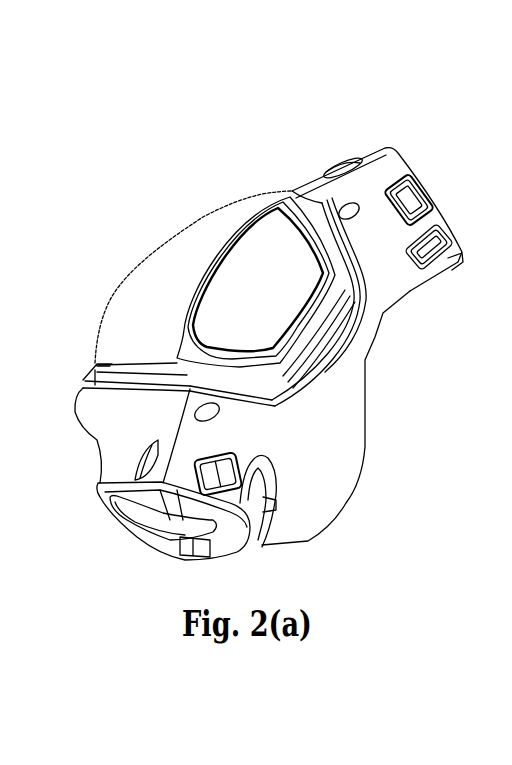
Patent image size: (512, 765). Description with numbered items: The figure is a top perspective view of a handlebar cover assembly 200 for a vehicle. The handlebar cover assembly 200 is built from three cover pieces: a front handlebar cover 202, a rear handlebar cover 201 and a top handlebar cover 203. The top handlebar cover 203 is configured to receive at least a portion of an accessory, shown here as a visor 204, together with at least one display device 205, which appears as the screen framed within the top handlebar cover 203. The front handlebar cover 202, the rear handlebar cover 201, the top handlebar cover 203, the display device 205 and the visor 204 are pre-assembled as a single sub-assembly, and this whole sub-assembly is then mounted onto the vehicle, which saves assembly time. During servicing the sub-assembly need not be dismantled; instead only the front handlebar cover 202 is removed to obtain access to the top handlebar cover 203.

The handlebar cover assembly 200 is at (385, 154).
The rear handlebar cover 201 is at (328, 417).
The front handlebar cover 202 is at (83, 380).
The top handlebar cover 203 is at (302, 213).
The visor 204 is at (183, 242).
The display device 205 is at (277, 290).